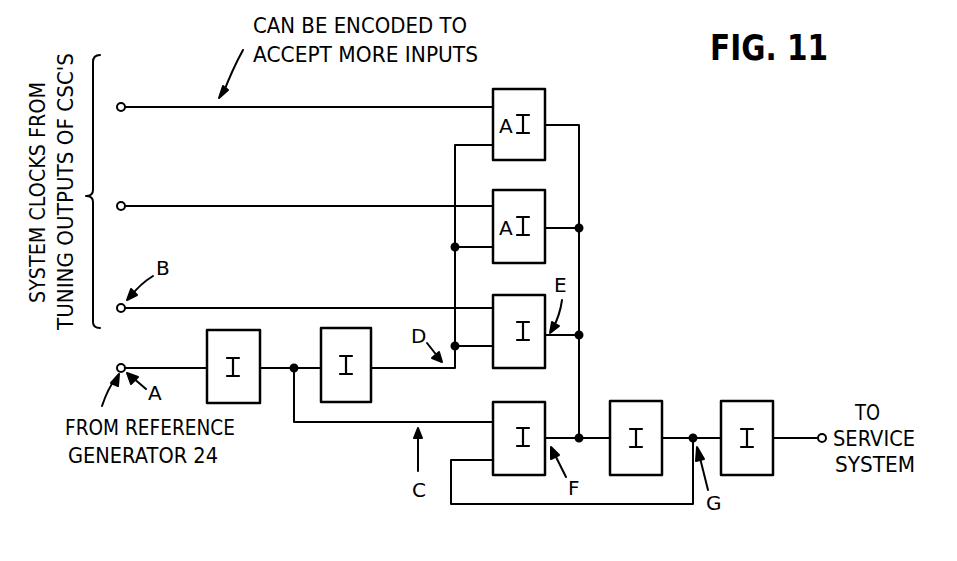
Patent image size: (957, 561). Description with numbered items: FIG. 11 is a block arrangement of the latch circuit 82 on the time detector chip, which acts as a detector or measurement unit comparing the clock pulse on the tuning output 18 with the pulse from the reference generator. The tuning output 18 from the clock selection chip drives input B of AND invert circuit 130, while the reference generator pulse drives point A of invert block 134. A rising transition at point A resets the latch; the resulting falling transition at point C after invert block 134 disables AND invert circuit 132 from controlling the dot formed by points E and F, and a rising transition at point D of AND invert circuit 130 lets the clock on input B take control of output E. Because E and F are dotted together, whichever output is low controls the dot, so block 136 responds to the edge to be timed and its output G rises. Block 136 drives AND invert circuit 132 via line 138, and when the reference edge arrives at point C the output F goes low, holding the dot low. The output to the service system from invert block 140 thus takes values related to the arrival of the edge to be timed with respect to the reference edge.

The tuning output 18 is at (218, 311).
The latch circuit 82 is at (349, 457).
The AND invert circuit 130 is at (512, 295).
The AND invert circuit 132 is at (516, 402).
The invert block 134 is at (289, 364).
The block 136 is at (628, 401).
The line 138 is at (661, 505).
The invert block 140 is at (743, 401).